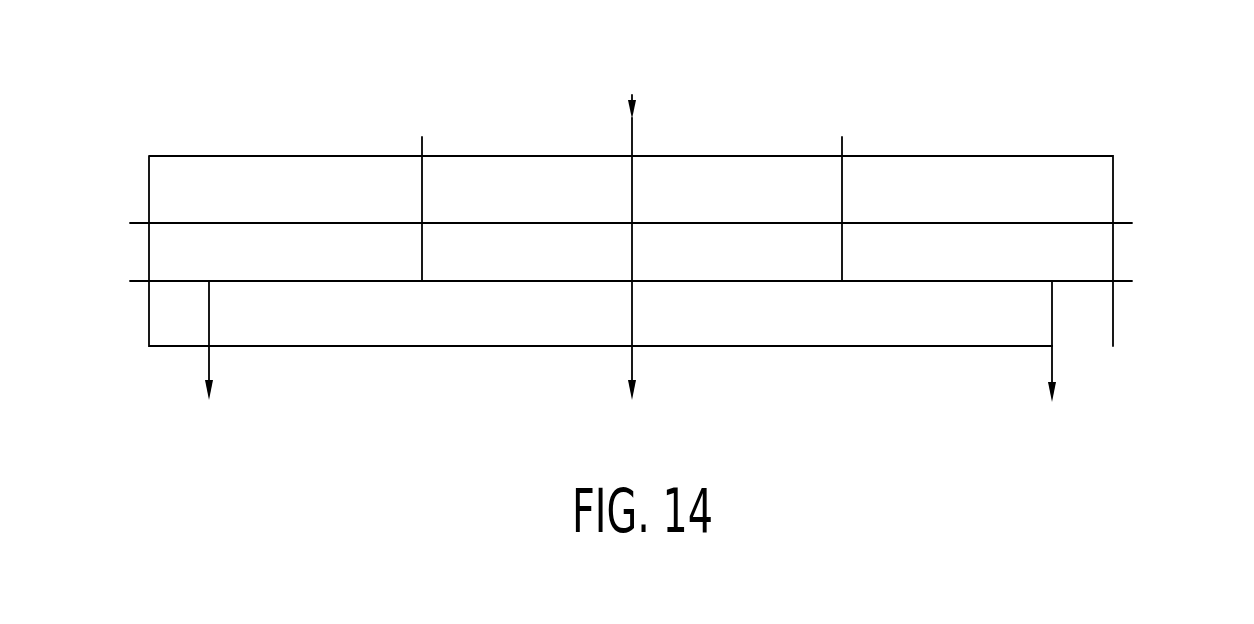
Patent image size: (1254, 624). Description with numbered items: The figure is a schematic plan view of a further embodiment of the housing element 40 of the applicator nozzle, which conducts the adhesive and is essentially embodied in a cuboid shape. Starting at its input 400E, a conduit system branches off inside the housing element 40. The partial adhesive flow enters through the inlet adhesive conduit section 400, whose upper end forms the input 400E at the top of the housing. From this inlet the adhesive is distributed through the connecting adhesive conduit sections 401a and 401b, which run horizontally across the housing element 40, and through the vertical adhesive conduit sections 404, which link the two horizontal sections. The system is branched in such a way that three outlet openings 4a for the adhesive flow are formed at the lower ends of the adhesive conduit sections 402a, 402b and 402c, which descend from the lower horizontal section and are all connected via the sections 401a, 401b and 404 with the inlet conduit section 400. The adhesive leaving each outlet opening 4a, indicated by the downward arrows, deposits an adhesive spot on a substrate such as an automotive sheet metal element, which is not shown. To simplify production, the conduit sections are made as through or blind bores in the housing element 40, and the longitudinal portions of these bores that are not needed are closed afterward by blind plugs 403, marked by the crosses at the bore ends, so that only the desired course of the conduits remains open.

The housing element 40 is at (1092, 115).
The adhesive conduit section 400 is at (633, 181).
The input 400E is at (631, 156).
The adhesive conduit section 401a is at (558, 222).
The adhesive conduit section 401b is at (518, 282).
The adhesive conduit section 402a is at (211, 316).
The adhesive conduit section 402b is at (1050, 326).
The adhesive conduit section 402c is at (633, 323).
The blind plugs 403 is at (850, 121).
The adhesive conduit section 404 is at (421, 256).
The outlet openings 4a is at (211, 348).